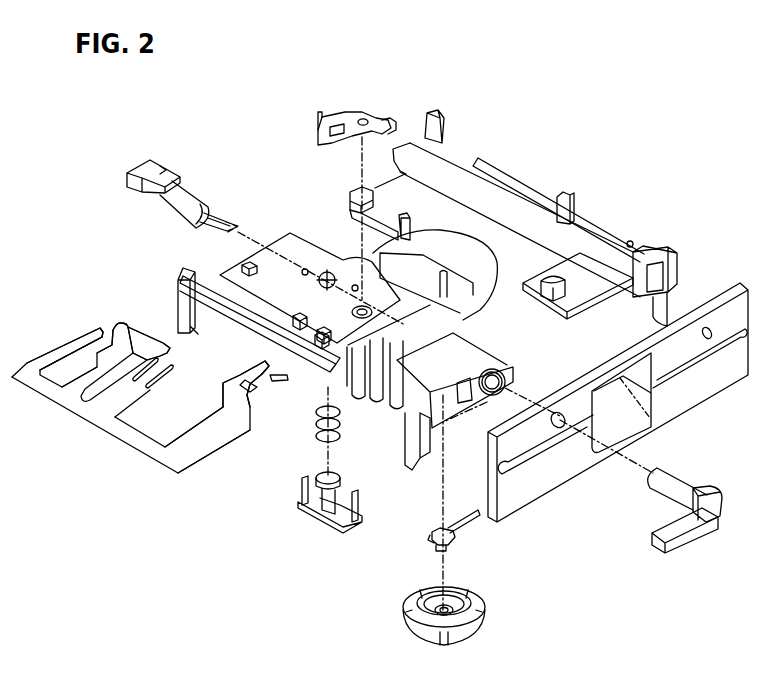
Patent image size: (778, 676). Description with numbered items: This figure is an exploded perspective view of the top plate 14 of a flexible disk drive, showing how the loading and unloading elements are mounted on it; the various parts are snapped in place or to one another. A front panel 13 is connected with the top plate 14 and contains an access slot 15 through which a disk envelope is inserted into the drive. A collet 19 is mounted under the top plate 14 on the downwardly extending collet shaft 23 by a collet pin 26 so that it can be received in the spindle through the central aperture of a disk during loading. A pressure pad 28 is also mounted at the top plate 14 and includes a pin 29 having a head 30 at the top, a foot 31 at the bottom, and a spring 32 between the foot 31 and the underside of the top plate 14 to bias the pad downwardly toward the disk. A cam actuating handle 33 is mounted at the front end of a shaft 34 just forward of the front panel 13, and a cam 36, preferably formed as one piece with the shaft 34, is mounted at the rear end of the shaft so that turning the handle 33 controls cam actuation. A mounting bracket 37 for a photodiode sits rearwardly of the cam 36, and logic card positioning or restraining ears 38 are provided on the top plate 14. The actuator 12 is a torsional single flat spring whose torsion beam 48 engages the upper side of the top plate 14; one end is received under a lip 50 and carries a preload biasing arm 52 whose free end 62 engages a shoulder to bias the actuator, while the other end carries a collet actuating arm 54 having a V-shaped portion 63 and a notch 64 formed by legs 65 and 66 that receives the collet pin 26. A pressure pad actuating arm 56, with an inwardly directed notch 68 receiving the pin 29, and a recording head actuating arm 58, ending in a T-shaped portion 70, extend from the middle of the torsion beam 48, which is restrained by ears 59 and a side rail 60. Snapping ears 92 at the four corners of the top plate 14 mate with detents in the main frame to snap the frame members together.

The actuator 12 is at (143, 457).
The front panel 13 is at (667, 413).
The top plate 14 is at (597, 223).
The access slot 15 is at (673, 367).
The collet 19 is at (463, 598).
The collet shaft 23 is at (430, 288).
The collet pin 26 is at (455, 535).
The pressure pad 28 is at (290, 484).
The pin 29 is at (337, 495).
The head 30 is at (336, 476).
The foot 31 is at (330, 525).
The spring 32 is at (340, 428).
The cam actuating handle 33 is at (678, 537).
The shaft 34 is at (190, 201).
The cam 36 is at (145, 168).
The mounting bracket 37 is at (348, 120).
The ears 38 is at (436, 118).
The torsion beam 48 is at (100, 410).
The lip 50 is at (193, 272).
The preload biasing arm 52 is at (45, 357).
The collet actuating arm 54 is at (208, 438).
The pressure pad actuating arm 56 is at (120, 397).
The recording head actuating arm 58 is at (118, 350).
The ears 59 is at (322, 335).
The side rail 60 is at (240, 317).
The free end 62 is at (96, 337).
The V-shaped portion 63 is at (223, 382).
The notch 64 is at (256, 386).
The leg 65 is at (260, 363).
The leg 66 is at (288, 378).
The notch 68 is at (142, 378).
The T-shaped portion 70 is at (150, 340).
The snapping ears 92 is at (660, 305).